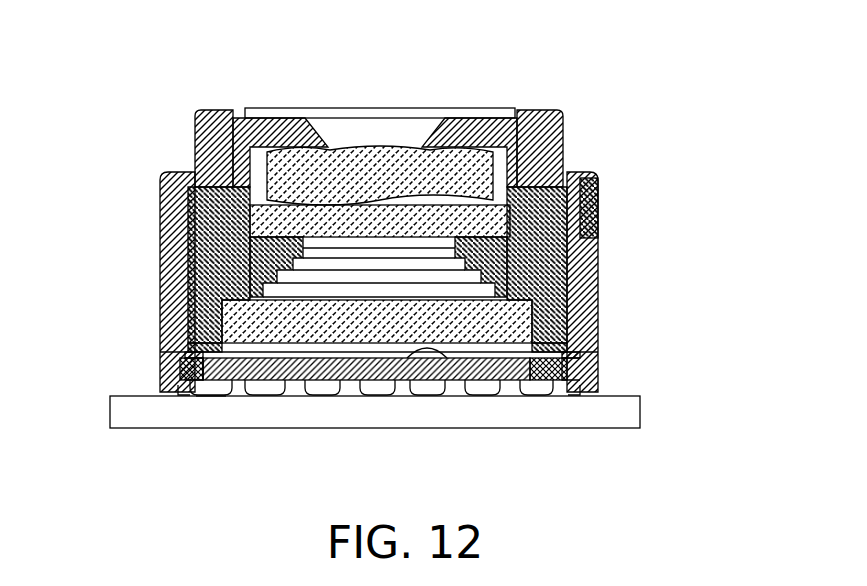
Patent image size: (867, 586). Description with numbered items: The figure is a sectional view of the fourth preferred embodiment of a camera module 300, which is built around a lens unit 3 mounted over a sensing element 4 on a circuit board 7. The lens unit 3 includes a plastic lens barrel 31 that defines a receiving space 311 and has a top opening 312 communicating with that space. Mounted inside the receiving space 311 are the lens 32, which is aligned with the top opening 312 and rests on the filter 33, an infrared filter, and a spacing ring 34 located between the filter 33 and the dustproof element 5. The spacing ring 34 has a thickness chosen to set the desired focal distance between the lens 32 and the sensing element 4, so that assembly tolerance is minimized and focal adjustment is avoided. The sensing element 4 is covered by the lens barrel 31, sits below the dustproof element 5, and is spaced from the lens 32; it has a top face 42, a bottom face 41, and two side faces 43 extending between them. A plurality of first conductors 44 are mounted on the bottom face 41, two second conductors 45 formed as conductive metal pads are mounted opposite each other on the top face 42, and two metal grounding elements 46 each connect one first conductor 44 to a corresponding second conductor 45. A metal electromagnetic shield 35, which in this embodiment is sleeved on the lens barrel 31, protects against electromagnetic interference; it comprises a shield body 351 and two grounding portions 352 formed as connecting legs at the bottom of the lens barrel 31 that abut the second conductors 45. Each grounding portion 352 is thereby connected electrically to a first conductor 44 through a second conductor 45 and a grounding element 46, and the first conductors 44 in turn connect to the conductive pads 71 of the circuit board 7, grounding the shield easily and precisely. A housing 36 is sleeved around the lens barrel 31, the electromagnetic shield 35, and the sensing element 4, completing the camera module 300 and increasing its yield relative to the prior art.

The camera module 300 is at (492, 84).
The lens unit 3 is at (163, 136).
The top opening 312 is at (345, 108).
The housing 36 is at (556, 117).
The lens barrel 31 is at (508, 143).
The lens 32 is at (510, 160).
The filter 33 is at (170, 210).
The spacing ring 34 is at (215, 243).
The electromagnetic shield 35 is at (582, 262).
The shield body 351 is at (598, 200).
The grounding portion 352 is at (596, 340).
The receiving space 311 is at (320, 268).
The dustproof element 5 is at (358, 322).
The sensing element 4 is at (460, 365).
The bottom face 41 is at (400, 388).
The top face 42 is at (450, 360).
The side face 43 is at (184, 392).
The first conductor 44 is at (208, 388).
The second conductor 45 is at (200, 356).
The grounding element 46 is at (200, 368).
The circuit board 7 is at (127, 410).
The conductive pad 71 is at (210, 397).